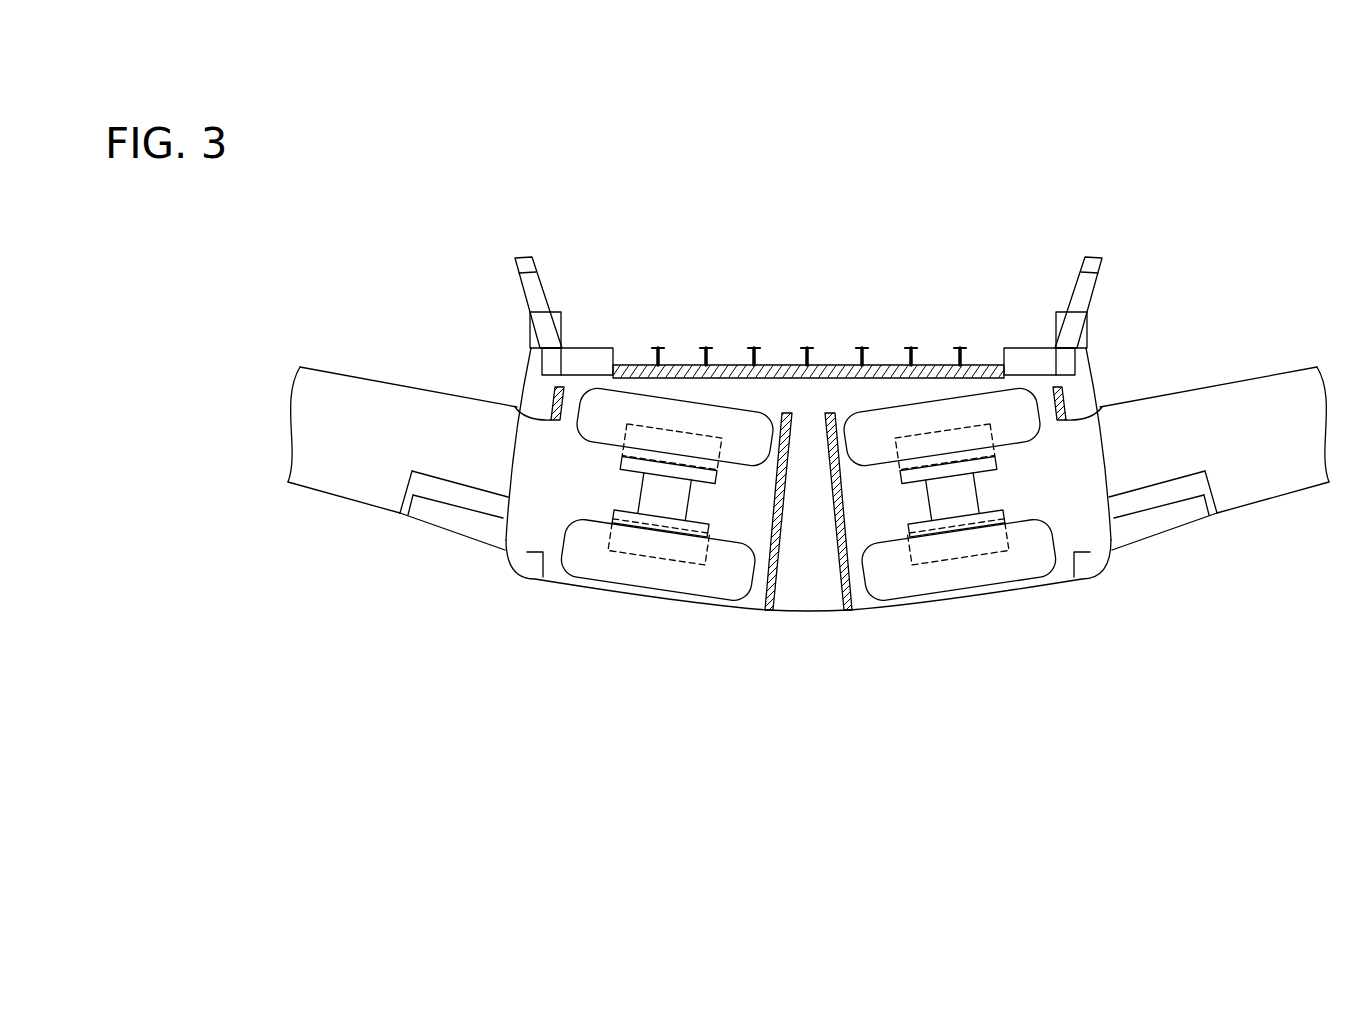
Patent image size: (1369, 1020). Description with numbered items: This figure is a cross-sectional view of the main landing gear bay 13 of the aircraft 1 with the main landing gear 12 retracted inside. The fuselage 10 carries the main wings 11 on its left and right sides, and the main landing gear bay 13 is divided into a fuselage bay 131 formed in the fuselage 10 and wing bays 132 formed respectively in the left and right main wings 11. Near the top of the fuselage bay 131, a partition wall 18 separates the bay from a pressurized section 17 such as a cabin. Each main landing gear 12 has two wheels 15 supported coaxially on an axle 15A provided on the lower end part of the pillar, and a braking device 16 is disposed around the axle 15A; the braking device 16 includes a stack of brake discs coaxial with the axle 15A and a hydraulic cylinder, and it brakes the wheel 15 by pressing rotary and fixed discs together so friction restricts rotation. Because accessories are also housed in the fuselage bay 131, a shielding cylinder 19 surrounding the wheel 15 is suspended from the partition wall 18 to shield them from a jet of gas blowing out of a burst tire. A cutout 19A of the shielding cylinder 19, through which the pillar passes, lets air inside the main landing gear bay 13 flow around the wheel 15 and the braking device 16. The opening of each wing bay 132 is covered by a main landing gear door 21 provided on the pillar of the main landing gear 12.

The aircraft 1 is at (1126, 207).
The fuselage 10 is at (1103, 262).
The main wing 11 is at (338, 373).
The main landing gear 12 is at (683, 392).
The main landing gear bay 13 is at (910, 700).
The fuselage bay 131 is at (806, 606).
The wing bay 132 is at (478, 516).
The wheel 15 is at (747, 406).
The axle 15A is at (640, 477).
The braking device 16 is at (647, 425).
The pressurized section 17 is at (824, 247).
The partition wall 18 is at (932, 366).
The shielding cylinder 19 is at (785, 412).
The cutout 19A is at (515, 407).
The main landing gear door 21 is at (532, 555).